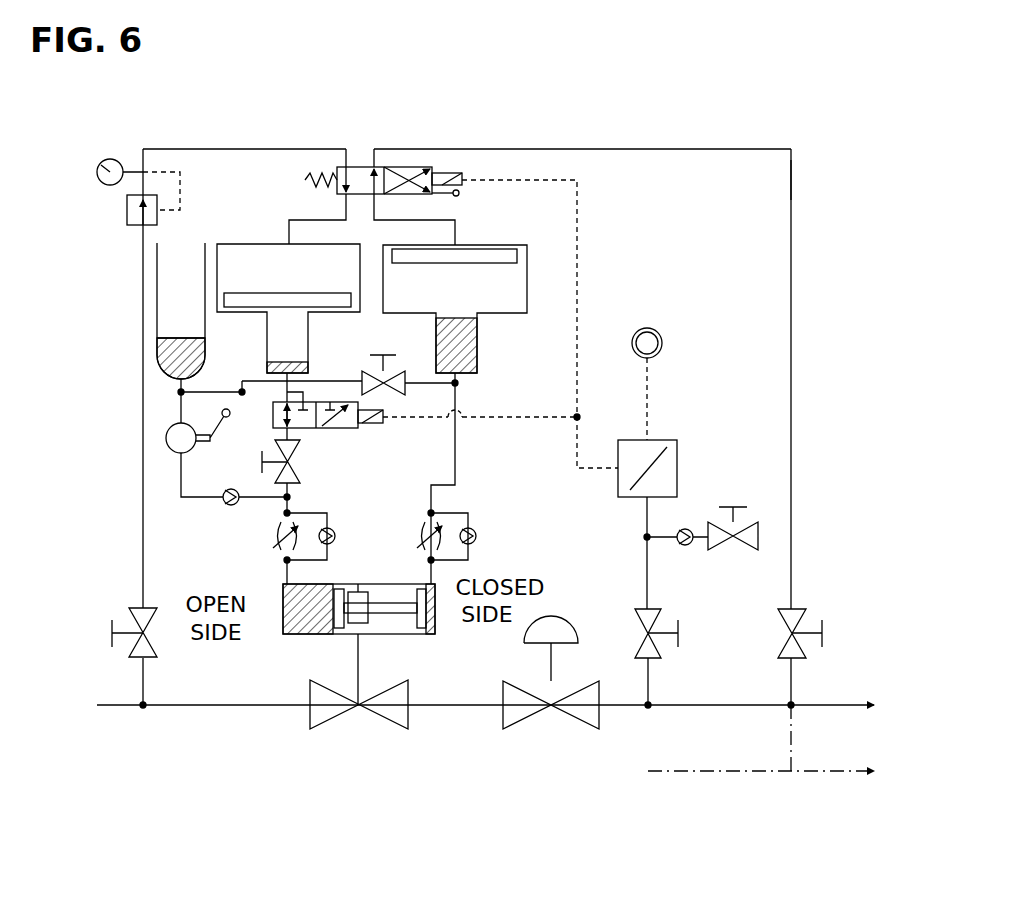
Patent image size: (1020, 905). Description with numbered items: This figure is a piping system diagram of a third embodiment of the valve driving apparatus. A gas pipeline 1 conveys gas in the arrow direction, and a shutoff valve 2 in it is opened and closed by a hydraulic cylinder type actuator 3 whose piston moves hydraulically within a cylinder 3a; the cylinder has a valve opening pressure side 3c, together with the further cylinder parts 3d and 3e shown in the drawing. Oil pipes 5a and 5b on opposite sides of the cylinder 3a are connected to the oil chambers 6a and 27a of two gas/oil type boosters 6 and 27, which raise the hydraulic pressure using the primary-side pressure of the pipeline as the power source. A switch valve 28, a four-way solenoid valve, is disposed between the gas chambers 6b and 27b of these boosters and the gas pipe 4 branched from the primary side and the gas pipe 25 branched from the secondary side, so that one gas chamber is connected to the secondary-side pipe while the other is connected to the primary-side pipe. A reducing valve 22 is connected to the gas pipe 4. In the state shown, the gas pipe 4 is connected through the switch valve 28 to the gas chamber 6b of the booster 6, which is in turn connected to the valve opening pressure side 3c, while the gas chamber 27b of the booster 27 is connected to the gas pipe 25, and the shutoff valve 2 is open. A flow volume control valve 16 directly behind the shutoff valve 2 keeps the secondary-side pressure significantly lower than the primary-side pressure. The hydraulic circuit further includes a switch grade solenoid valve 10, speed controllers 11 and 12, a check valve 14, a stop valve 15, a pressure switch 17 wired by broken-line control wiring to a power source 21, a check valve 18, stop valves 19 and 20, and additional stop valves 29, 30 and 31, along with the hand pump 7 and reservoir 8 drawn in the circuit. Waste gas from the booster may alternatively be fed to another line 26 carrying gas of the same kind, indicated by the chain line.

The gas pipeline 1 is at (177, 708).
The shutoff valve 2 is at (388, 727).
The actuator 3 is at (371, 566).
The cylinder 3a is at (318, 633).
The valve opening pressure side 3c is at (283, 632).
The closed side piston 3d is at (420, 626).
The closed side chamber 3e is at (436, 626).
The gas pipe 4 is at (229, 147).
The oil pipe 5a is at (284, 499).
The oil pipe 5b is at (457, 447).
The gas/oil type booster 6 is at (222, 242).
The oil chamber 6a is at (272, 368).
The gas chamber 6b is at (268, 255).
The hand pump 7 is at (166, 440).
The oil reservoir 8 is at (170, 308).
The switch grade solenoid valve 10 is at (342, 432).
The speed controller 11 is at (490, 531).
The speed controller 12 is at (265, 546).
The check valve 14 is at (226, 504).
The stop valve 15 is at (130, 657).
The flow volume control valve 16 is at (590, 729).
The pressure switch 17 is at (678, 445).
The check valve 18 is at (686, 529).
The stop valve 19 is at (661, 612).
The stop valve 20 is at (758, 541).
The power source 21 is at (663, 343).
The reducing valve 22 is at (127, 212).
The gas pipe 25 is at (793, 180).
The another line 26 is at (711, 769).
The gas/oil type booster 27 is at (527, 244).
The oil chamber 27a is at (478, 350).
The gas chamber 27b is at (495, 250).
The switch valve 28 is at (363, 162).
The stop valve 29 is at (262, 462).
The stop valve 30 is at (370, 370).
The stop valve 31 is at (806, 612).